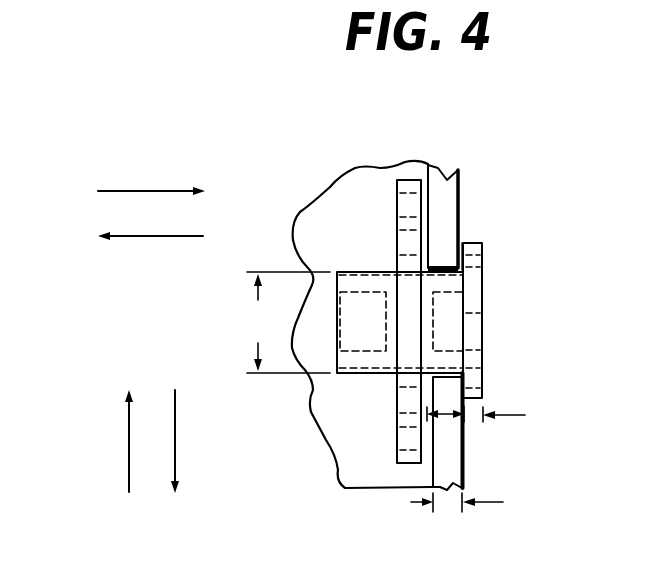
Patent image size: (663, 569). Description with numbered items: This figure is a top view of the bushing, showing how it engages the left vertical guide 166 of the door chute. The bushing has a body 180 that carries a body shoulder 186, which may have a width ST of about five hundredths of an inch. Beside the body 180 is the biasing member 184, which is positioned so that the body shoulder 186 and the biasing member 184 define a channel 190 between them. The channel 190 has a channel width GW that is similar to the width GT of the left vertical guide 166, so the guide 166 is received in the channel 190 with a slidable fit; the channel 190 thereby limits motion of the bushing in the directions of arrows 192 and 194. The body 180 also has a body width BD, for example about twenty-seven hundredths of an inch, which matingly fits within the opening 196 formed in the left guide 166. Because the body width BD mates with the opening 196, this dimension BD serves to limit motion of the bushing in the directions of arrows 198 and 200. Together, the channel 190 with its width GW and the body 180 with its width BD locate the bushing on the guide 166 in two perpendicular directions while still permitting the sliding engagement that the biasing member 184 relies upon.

The left vertical guide 166 is at (453, 187).
The body 180 is at (387, 374).
The biasing member 184 is at (402, 438).
The body shoulder 186 is at (473, 322).
The channel 190 is at (467, 232).
The arrow 192 is at (158, 237).
The arrow 194 is at (158, 192).
The opening 196 is at (471, 455).
The arrow 198 is at (128, 430).
The arrow 200 is at (175, 430).
The body width BD is at (285, 322).
The channel width GW is at (446, 417).
The body shoulder width ST is at (521, 415).
The guide width GT is at (478, 503).